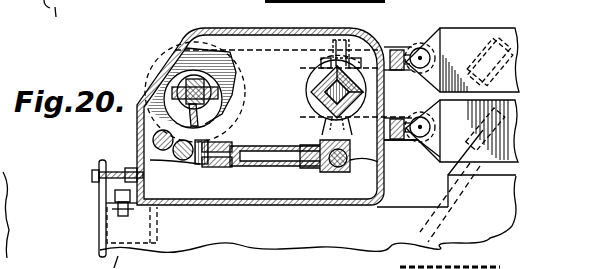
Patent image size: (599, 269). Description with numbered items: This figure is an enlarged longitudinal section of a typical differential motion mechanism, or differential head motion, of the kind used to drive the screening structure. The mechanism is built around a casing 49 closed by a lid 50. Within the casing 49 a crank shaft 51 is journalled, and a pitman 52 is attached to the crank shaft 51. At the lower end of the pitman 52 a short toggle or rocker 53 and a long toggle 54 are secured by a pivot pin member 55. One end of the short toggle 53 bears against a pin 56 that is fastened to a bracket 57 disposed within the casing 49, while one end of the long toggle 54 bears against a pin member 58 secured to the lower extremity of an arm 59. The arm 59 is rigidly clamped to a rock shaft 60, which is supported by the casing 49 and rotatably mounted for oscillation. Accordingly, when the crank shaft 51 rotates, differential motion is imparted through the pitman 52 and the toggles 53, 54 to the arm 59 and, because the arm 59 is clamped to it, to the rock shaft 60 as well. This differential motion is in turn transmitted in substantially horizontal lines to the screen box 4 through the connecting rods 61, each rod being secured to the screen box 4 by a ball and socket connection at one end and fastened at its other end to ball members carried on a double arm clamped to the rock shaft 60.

The screen box 4 is at (486, 22).
The casing 49 is at (172, 58).
The lid 50 is at (271, 30).
The crank shaft 51 is at (215, 95).
The pitman 52 is at (200, 122).
The short toggle 53 is at (166, 160).
The long toggle 54 is at (270, 141).
The pivot pin member 55 is at (208, 170).
The pin 56 is at (143, 150).
The bracket 57 is at (143, 124).
The pin member 58 is at (330, 172).
The arm 59 is at (378, 162).
The rock shaft 60 is at (322, 88).
The connecting rods 61 is at (394, 49).